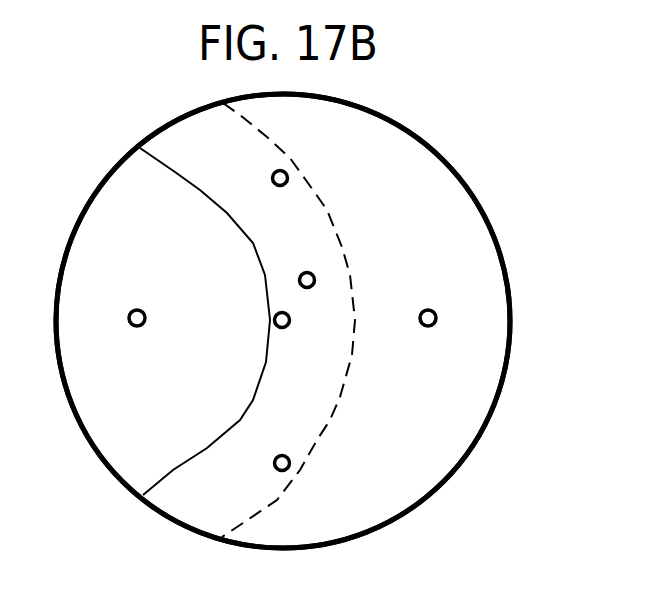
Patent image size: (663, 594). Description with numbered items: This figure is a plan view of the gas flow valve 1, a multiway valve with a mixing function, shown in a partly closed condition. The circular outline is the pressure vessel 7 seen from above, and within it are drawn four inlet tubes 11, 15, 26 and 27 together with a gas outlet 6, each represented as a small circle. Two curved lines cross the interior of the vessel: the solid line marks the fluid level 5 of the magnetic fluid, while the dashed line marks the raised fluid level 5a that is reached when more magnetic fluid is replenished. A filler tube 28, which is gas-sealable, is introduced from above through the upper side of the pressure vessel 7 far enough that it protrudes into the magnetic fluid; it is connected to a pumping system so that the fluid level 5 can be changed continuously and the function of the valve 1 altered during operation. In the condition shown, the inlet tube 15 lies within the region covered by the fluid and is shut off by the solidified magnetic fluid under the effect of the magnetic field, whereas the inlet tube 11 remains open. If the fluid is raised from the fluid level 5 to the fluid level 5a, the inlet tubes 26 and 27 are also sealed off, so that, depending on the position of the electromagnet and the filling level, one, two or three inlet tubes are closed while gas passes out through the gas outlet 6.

The valve 1 is at (83, 448).
The pressure vessel 7 is at (513, 318).
The fluid level 5 is at (203, 190).
The fluid level 5a is at (353, 345).
The inlet tube 26 is at (284, 172).
The filler tube 28 is at (313, 275).
The gas outlet 6 is at (284, 328).
The inlet tube 15 is at (132, 309).
The inlet tube 11 is at (432, 310).
The inlet tube 27 is at (276, 468).